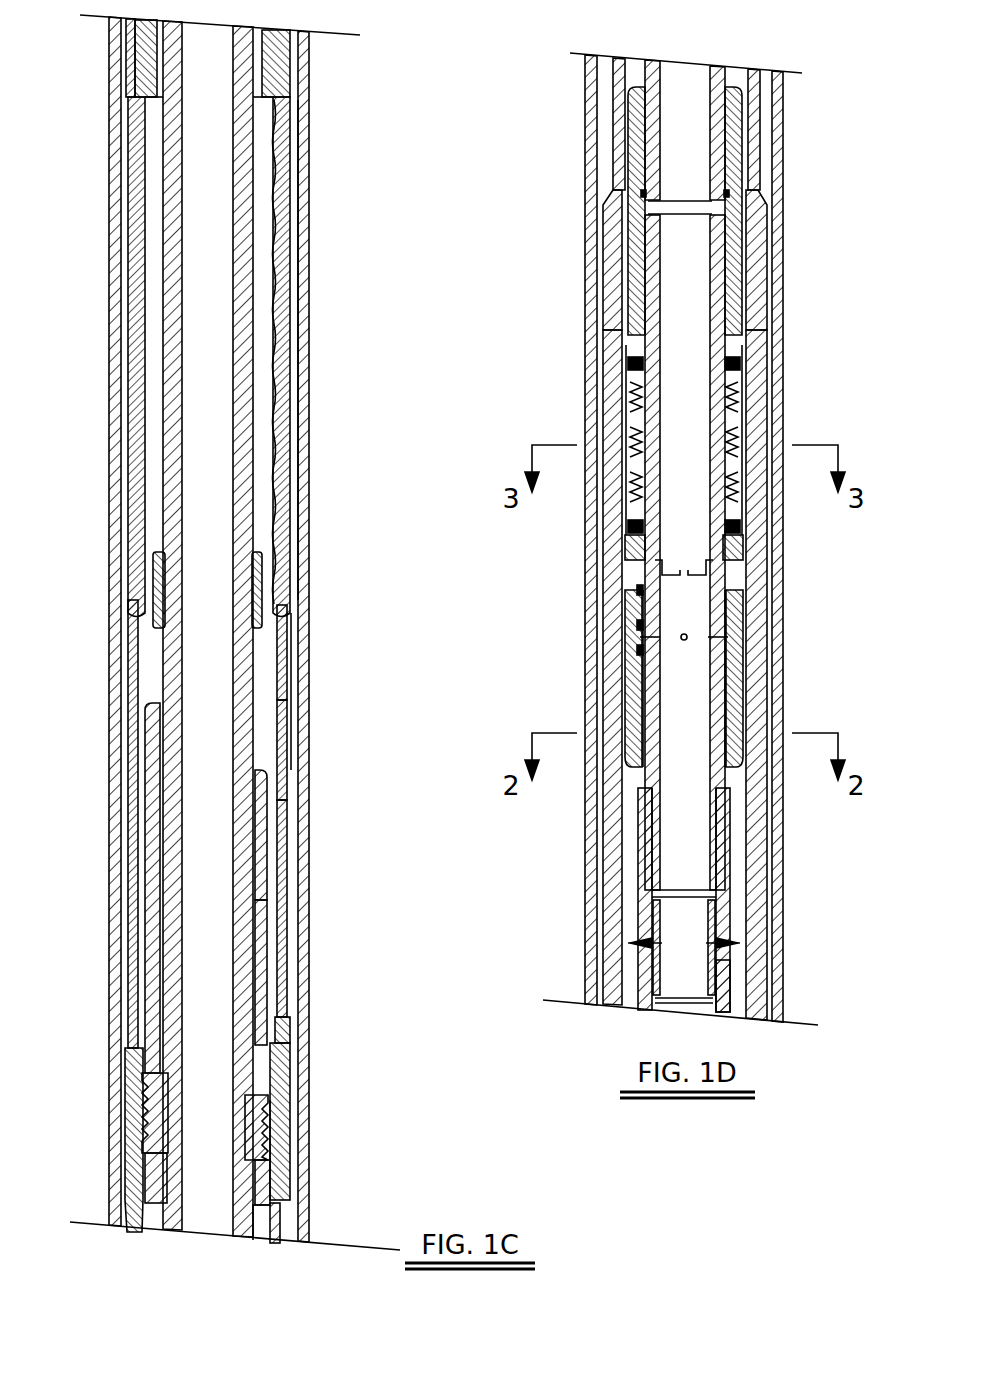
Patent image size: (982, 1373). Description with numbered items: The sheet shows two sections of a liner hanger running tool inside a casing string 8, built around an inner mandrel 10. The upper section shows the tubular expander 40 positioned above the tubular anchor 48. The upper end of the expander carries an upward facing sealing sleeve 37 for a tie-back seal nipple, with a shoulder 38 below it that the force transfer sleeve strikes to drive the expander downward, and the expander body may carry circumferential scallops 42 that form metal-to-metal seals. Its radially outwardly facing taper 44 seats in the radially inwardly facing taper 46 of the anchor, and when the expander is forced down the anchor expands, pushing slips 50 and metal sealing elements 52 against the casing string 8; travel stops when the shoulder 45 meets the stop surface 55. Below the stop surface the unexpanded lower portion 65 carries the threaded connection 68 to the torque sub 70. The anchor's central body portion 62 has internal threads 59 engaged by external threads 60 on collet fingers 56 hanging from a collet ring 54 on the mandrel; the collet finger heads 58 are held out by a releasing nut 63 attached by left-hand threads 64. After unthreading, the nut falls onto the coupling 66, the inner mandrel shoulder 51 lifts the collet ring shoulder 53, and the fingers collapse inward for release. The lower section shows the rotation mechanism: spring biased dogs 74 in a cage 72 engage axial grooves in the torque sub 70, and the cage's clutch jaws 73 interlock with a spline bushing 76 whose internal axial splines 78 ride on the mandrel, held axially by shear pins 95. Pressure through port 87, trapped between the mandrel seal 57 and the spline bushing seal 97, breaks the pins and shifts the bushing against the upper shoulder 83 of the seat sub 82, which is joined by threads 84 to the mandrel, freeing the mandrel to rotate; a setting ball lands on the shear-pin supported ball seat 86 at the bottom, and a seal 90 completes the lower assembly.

In FIG. 1C, the casing string 8 is at (305, 400).
In FIG. 1D, the casing string 8 is at (778, 403).
In FIG. 1D, the inner mandrel 10 is at (725, 280).
In FIG. 1C, the sealing sleeve 37 is at (308, 48).
In FIG. 1C, the shoulder 38 is at (288, 105).
In FIG. 1C, the tubular expander 40 is at (290, 212).
In FIG. 1C, the circumferential scallops 42 is at (298, 282).
In FIG. 1C, the radially outwardly facing taper 44 is at (285, 600).
In FIG. 1C, the shoulder 45 is at (290, 650).
In FIG. 1C, the radially inwardly facing taper 46 is at (285, 571).
In FIG. 1C, the tubular anchor 48 is at (290, 740).
In FIG. 1C, the slips 50 is at (290, 680).
In FIG. 1C, the inner mandrel shoulder 51 is at (135, 1065).
In FIG. 1C, the metal sealing elements 52 is at (270, 860).
In FIG. 1C, the collet ring shoulder 53 is at (160, 790).
In FIG. 1C, the collet ring 54 is at (268, 770).
In FIG. 1C, the stop surface 55 is at (283, 1030).
In FIG. 1C, the collet fingers 56 is at (278, 910).
In FIG. 1D, the mandrel seal 57 is at (640, 625).
In FIG. 1C, the collet finger heads 58 is at (282, 1128).
In FIG. 1C, the internal threads 59 is at (290, 1057).
In FIG. 1C, the external threads 60 is at (290, 1103).
In FIG. 1C, the central body portion 62 is at (280, 1165).
In FIG. 1C, the releasing nut 63 is at (272, 1213).
In FIG. 1C, the left-hand threads 64 is at (275, 1180).
In FIG. 1D, the lower portion of the tubular anchor 65 is at (757, 103).
In FIG. 1C, the coupling 66 is at (130, 605).
In FIG. 1D, the coupling 66 is at (732, 140).
In FIG. 1D, the threaded connection 68 is at (760, 232).
In FIG. 1D, the torque sub 70 is at (760, 328).
In FIG. 1D, the cage 72 is at (745, 560).
In FIG. 1D, the clutch jaws 73 is at (665, 562).
In FIG. 1D, the spring biased dogs 74 is at (735, 475).
In FIG. 1D, the spline bushing 76 is at (735, 660).
In FIG. 1D, the internal axial splines 78 is at (735, 705).
In FIG. 1D, the seat sub 82 is at (725, 895).
In FIG. 1D, the upper shoulder 83 is at (720, 790).
In FIG. 1D, the threads 84 is at (725, 830).
In FIG. 1D, the ball seat 86 is at (725, 968).
In FIG. 1D, the port 87 is at (700, 632).
In FIG. 1D, the seal 90 is at (728, 935).
In FIG. 1D, the shear pins 95 is at (635, 590).
In FIG. 1D, the spline bushing seal 97 is at (640, 650).